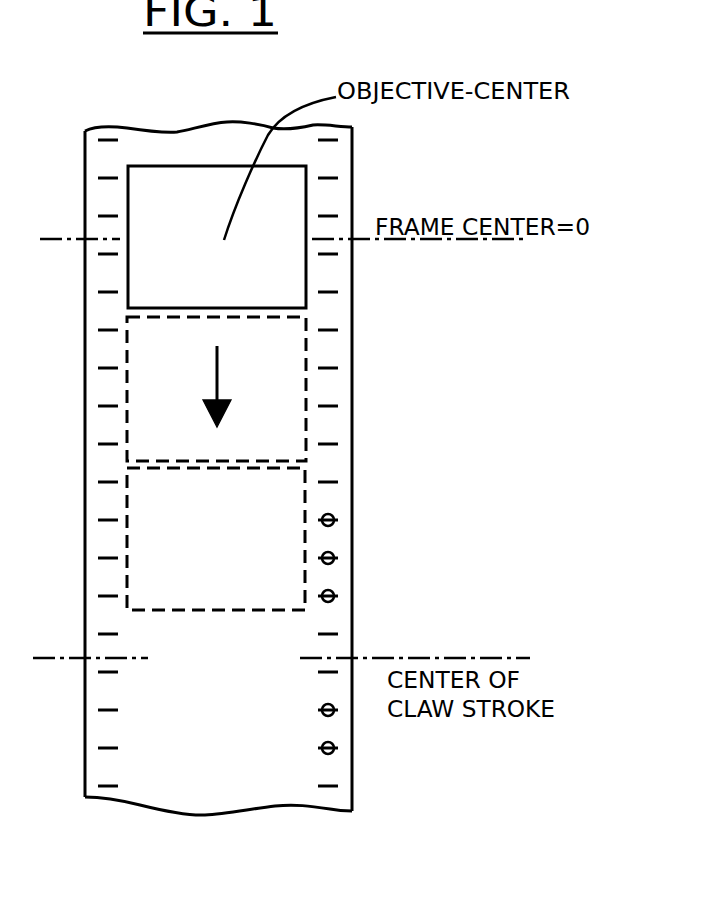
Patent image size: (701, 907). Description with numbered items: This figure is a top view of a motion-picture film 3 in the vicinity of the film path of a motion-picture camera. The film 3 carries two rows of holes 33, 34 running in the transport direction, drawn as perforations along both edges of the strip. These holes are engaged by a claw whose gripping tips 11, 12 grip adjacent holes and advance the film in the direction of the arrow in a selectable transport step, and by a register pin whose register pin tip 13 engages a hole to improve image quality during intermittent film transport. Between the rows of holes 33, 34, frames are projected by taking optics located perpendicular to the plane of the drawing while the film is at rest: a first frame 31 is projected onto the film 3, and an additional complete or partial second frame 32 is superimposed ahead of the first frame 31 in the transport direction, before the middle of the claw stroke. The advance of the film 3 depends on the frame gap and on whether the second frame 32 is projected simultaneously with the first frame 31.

The motion-picture film 3 is at (346, 316).
The first frame 31 is at (279, 218).
The second frame 32 is at (208, 590).
The row of holes 33 is at (108, 256).
The row of holes 34 is at (330, 380).
The gripping tip 11 is at (337, 562).
The gripping tip 12 is at (337, 599).
The register pin tip 13 is at (336, 519).